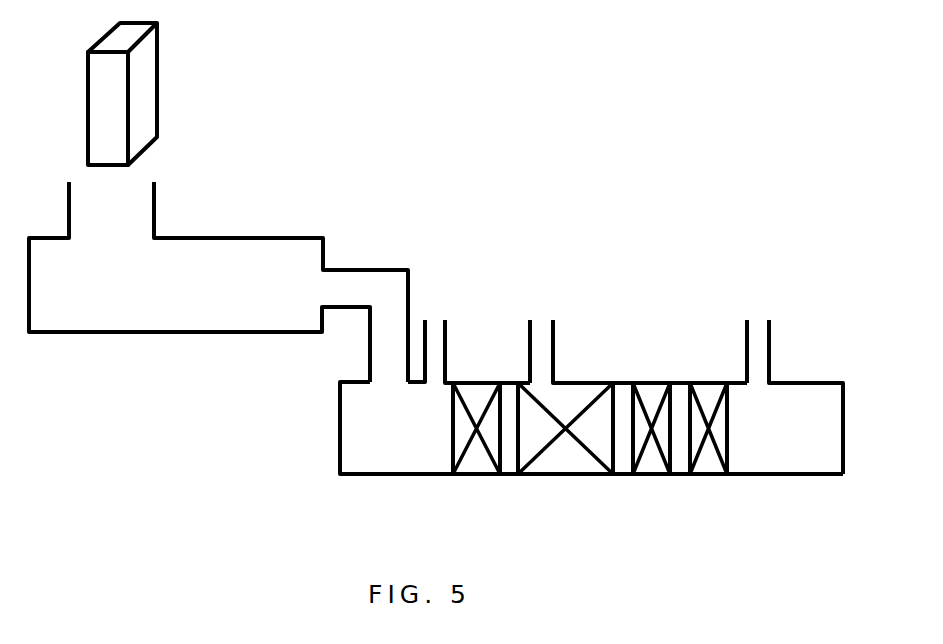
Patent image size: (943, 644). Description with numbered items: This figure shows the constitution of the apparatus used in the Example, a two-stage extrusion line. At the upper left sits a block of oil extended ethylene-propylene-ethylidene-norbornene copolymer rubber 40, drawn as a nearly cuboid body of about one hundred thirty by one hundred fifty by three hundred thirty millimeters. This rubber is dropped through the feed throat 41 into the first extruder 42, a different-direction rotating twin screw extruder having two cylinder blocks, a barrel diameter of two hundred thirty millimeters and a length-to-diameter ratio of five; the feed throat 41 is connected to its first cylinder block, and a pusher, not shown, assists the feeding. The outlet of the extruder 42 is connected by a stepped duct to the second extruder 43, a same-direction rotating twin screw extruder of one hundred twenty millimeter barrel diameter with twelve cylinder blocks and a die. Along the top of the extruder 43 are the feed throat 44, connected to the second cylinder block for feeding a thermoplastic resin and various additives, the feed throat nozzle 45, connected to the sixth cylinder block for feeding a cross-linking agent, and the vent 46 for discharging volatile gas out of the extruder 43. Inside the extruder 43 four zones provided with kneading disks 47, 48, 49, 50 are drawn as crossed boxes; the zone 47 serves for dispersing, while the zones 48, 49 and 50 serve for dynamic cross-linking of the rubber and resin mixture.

The oil extended ethylene-propylene-5-ethylidene-2-norbornene copolymer rubber 40 is at (148, 77).
The feed throat 41 is at (168, 202).
The extruder 42 is at (114, 306).
The extruder 43 is at (367, 427).
The feed throat 44 is at (455, 326).
The feed throat (nozzle) 45 is at (562, 326).
The vent 46 is at (782, 323).
The zone provided with kneading disks 47 is at (469, 489).
The zone provided with kneading disks 48 is at (576, 489).
The zone provided with kneading disks 49 is at (650, 489).
The zone provided with kneading disks 50 is at (707, 489).